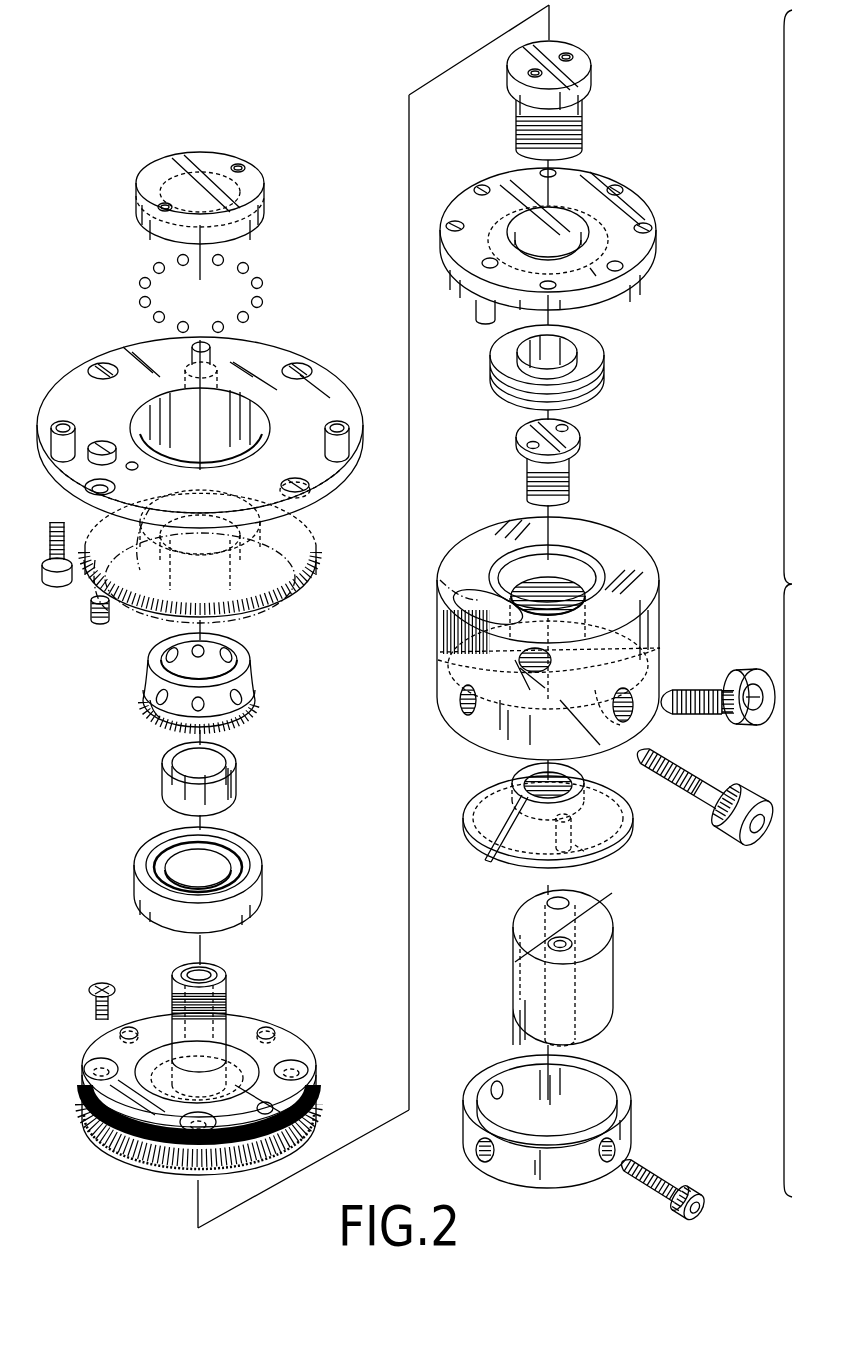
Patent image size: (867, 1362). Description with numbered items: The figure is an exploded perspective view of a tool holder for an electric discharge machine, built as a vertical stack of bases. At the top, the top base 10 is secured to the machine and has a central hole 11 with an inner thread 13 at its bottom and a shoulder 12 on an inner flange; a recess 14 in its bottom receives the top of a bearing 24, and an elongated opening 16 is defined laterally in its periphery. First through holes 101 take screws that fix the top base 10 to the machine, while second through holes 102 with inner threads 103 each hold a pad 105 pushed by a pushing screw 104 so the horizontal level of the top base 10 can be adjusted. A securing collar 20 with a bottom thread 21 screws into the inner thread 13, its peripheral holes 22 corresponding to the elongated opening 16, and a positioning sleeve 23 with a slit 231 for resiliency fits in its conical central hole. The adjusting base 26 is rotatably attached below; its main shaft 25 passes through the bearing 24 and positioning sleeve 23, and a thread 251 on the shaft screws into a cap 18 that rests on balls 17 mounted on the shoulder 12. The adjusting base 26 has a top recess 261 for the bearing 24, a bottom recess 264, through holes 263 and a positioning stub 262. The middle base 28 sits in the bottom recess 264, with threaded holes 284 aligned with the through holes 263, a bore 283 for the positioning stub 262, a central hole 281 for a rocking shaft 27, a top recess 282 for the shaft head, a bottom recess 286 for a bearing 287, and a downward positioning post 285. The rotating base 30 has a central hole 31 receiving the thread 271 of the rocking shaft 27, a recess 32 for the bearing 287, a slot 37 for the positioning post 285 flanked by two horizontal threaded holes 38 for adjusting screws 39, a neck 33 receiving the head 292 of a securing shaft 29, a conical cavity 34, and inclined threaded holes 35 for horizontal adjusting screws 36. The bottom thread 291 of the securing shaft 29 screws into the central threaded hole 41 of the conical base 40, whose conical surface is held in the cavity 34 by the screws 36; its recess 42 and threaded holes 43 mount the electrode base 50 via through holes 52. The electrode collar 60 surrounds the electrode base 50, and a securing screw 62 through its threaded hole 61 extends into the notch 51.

The top base 10 is at (202, 488).
The central hole 11 is at (232, 450).
The shoulder 12 is at (162, 395).
The inner thread 13 is at (158, 608).
The recess 14 is at (240, 600).
The elongated opening 16 is at (217, 569).
The balls 17 is at (248, 267).
The cap 18 is at (216, 162).
The first through holes 101 is at (60, 428).
The second through holes 102 is at (90, 487).
The inner threads 103 is at (82, 598).
The pushing screw 104 is at (112, 630).
The pad 105 is at (102, 442).
The securing collar 20 is at (206, 687).
The thread 21 is at (248, 712).
The holes 22 is at (160, 705).
The positioning sleeve 23 is at (228, 779).
The slit 231 is at (234, 792).
The bearing 24 is at (264, 890).
The main shaft 25 is at (234, 1030).
The thread 251 is at (227, 1000).
The adjusting base 26 is at (196, 1069).
The top recess 261 is at (152, 1055).
The positioning stub 262 is at (90, 1030).
The through holes 263 is at (98, 1068).
The bottom recess 264 is at (300, 1112).
The rocking shaft 27 is at (575, 100).
The thread 271 is at (583, 128).
The middle base 28 is at (565, 248).
The central hole 281 is at (568, 235).
The top recess 282 is at (577, 220).
The bore 283 is at (480, 188).
The threaded holes 284 is at (453, 224).
The positioning post 285 is at (486, 312).
The bottom recess 286 is at (595, 285).
The bearing 287 is at (605, 358).
The securing shaft 29 is at (577, 463).
The bottom thread 291 is at (570, 490).
The head 292 is at (580, 430).
The rotating base 30 is at (573, 643).
The central hole 31 is at (565, 595).
The recess 32 is at (600, 600).
The neck 33 is at (645, 652).
The conical cavity 34 is at (585, 745).
The inclined threaded holes 35 is at (636, 700).
The horizontal adjusting screw 36 is at (755, 676).
The slot 37 is at (480, 600).
The horizontal threaded holes 38 is at (540, 672).
The adjusting screws 39 is at (738, 832).
The conical base 40 is at (569, 834).
The central threaded hole 41 is at (530, 790).
The recess 42 is at (512, 868).
The threaded holes 43 is at (605, 866).
The electrode base 50 is at (566, 968).
The notch 51 is at (520, 931).
The through holes 52 is at (575, 948).
The electrode collar 60 is at (567, 1134).
The threaded hole 61 is at (606, 1165).
The securing screw 62 is at (668, 1192).